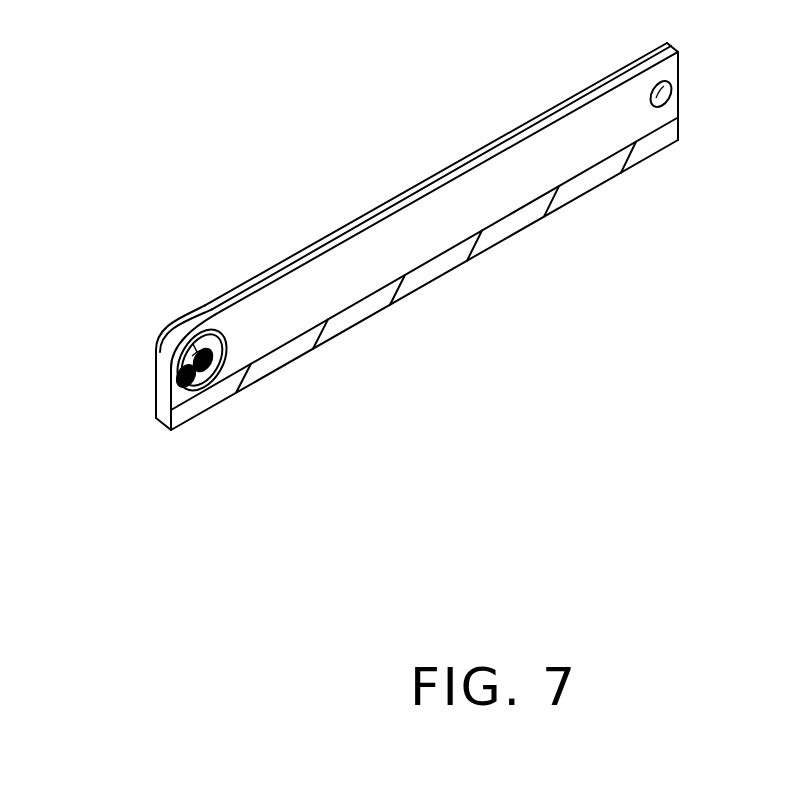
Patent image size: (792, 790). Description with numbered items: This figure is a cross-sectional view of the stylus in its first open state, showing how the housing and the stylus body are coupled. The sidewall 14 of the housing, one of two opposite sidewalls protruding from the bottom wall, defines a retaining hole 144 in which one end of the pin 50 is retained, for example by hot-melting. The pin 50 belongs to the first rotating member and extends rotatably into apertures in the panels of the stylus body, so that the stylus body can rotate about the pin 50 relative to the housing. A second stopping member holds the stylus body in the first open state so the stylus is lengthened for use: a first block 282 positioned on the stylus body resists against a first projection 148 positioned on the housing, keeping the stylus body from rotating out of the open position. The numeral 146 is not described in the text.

The sidewall 14 is at (368, 255).
The retaining hole 144 is at (670, 95).
The mounting hole 146 is at (213, 336).
The first projection 148 is at (188, 356).
The first block 282 is at (186, 382).
The pin 50 is at (222, 388).